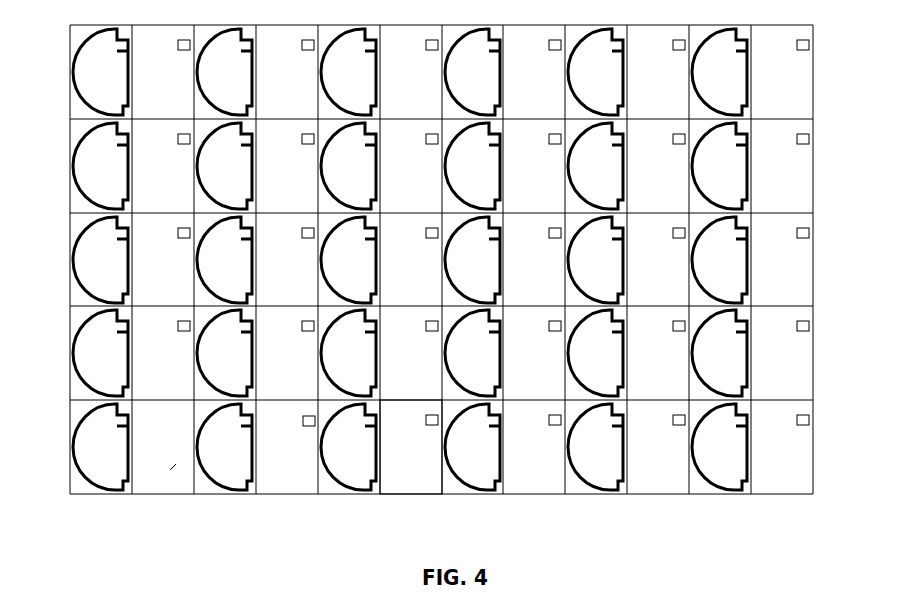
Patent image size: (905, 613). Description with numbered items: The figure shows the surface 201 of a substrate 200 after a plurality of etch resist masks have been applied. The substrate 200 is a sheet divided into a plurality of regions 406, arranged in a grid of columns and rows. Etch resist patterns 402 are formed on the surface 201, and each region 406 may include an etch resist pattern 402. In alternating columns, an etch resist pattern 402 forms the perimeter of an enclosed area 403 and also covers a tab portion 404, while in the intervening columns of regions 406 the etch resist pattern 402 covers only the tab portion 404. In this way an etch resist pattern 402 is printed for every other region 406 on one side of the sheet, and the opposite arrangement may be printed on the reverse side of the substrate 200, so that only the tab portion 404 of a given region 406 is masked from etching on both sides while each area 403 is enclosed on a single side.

The substrate 200 is at (813, 378).
The surface 201 is at (428, 456).
The etch resist pattern 402 is at (97, 497).
The area 403 is at (100, 440).
The tab portion 404 is at (305, 428).
The region 406 is at (172, 473).